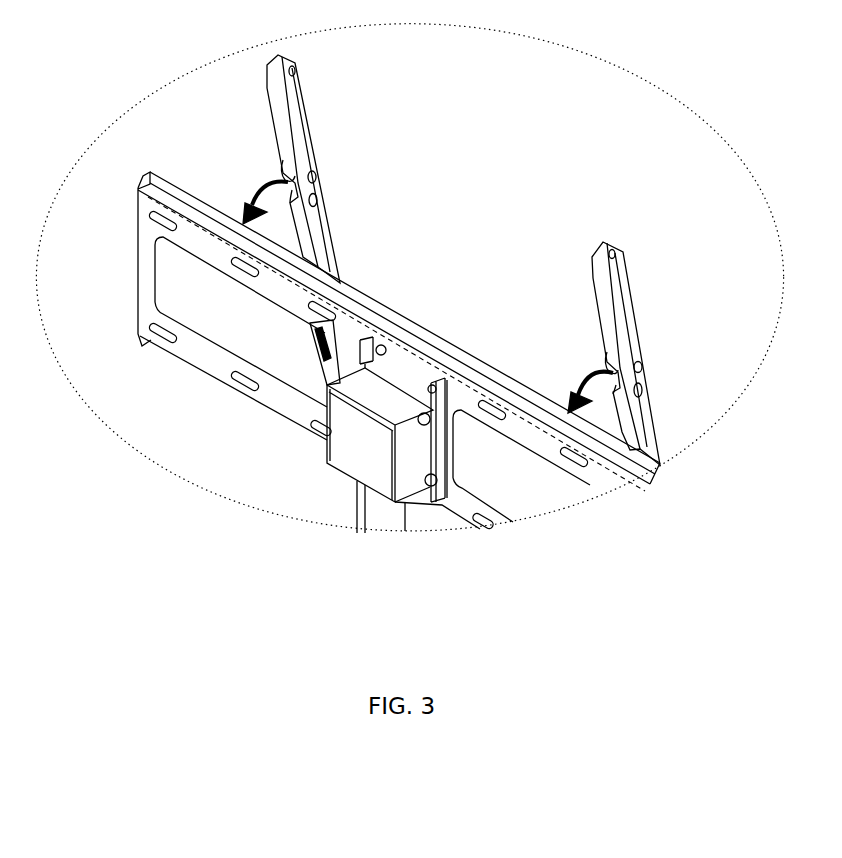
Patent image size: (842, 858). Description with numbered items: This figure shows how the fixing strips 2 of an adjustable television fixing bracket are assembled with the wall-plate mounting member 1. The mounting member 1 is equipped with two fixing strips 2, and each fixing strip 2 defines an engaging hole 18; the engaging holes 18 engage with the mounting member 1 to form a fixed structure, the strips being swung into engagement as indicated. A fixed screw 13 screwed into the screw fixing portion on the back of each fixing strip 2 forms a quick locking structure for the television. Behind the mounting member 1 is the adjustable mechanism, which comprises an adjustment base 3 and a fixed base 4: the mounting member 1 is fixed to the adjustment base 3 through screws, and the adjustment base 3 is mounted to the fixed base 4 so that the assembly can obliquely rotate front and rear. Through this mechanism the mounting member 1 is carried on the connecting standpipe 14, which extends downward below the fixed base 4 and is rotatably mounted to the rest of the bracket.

The mounting member 1 is at (448, 337).
The fixing strip 2 is at (328, 250).
The adjustment base 3 is at (455, 439).
The fixed base 4 is at (350, 457).
The fixed screw 13 is at (309, 372).
The connecting standpipe 14 is at (375, 515).
The engaging hole 18 is at (302, 163).